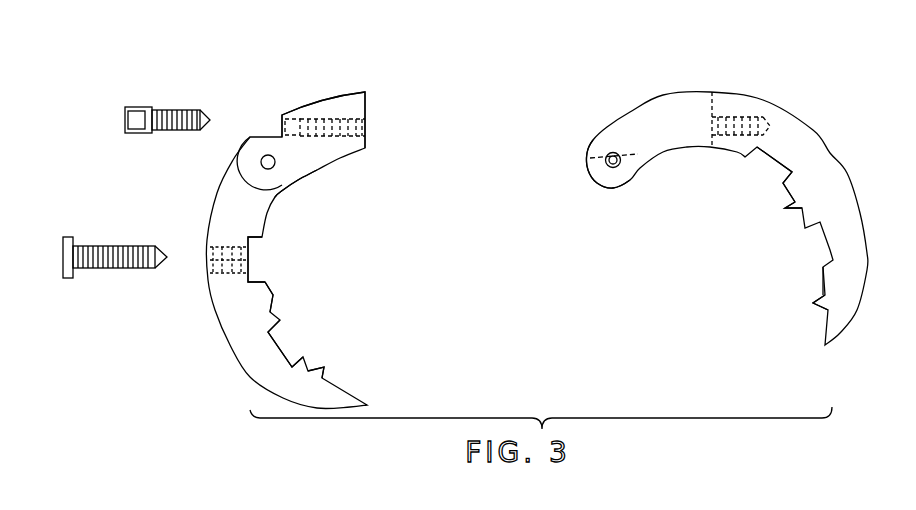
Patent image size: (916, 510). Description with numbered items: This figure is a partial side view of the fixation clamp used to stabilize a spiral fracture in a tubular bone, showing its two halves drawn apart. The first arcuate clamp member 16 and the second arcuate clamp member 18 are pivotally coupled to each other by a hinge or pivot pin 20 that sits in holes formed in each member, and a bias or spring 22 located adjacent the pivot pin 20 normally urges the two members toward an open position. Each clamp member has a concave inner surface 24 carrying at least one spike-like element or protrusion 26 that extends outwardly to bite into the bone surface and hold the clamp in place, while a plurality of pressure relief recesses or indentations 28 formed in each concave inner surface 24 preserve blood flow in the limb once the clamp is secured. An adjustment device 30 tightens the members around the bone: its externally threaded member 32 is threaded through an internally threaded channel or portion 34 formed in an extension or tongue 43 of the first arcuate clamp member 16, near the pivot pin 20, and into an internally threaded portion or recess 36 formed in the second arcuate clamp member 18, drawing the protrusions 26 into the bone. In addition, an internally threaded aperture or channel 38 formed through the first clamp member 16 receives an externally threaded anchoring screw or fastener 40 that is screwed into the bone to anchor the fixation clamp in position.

The first arcuate clamp member 16 is at (232, 356).
The second arcuate clamp member 18 is at (857, 213).
The hinge or pivot pin 20 is at (262, 157).
The bias or spring 22 is at (593, 155).
The concave inner surface 24 is at (281, 196).
The spike-like element or protrusion 26 is at (276, 297).
The pressure relief recess or indentation 28 is at (257, 258).
The adjustment device 30 is at (272, 90).
The externally threaded member 32 is at (165, 107).
The internally threaded channel or portion 34 is at (330, 112).
The internally threaded portion or recess 36 is at (738, 119).
The internally threaded aperture or channel 38 is at (216, 251).
The externally threaded anchoring screw or fastener 40 is at (68, 237).
The extension or tongue 43 is at (350, 92).